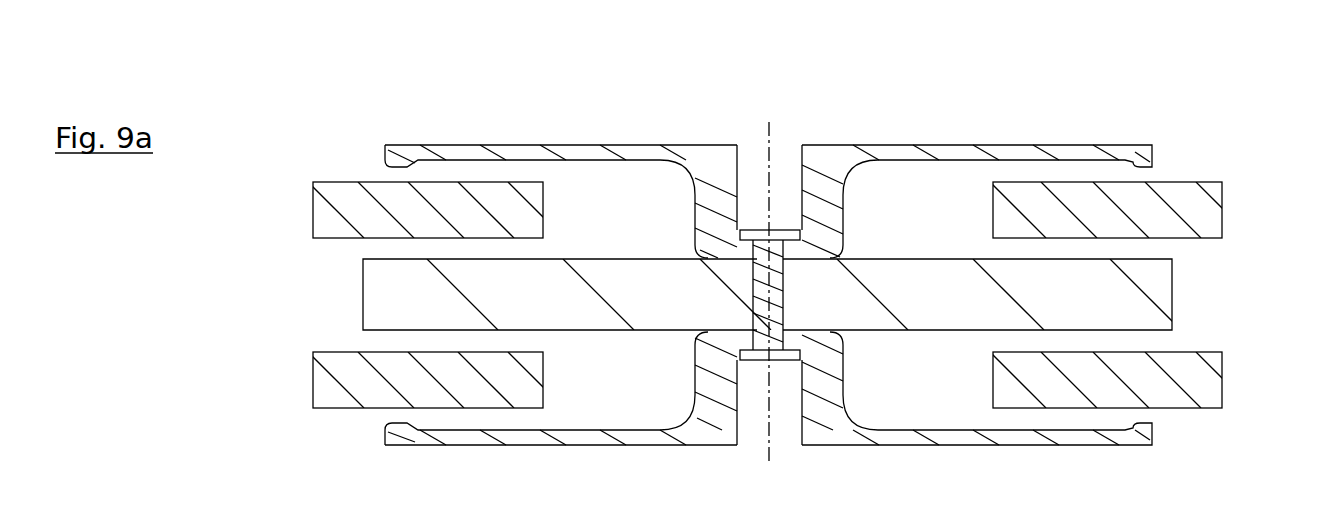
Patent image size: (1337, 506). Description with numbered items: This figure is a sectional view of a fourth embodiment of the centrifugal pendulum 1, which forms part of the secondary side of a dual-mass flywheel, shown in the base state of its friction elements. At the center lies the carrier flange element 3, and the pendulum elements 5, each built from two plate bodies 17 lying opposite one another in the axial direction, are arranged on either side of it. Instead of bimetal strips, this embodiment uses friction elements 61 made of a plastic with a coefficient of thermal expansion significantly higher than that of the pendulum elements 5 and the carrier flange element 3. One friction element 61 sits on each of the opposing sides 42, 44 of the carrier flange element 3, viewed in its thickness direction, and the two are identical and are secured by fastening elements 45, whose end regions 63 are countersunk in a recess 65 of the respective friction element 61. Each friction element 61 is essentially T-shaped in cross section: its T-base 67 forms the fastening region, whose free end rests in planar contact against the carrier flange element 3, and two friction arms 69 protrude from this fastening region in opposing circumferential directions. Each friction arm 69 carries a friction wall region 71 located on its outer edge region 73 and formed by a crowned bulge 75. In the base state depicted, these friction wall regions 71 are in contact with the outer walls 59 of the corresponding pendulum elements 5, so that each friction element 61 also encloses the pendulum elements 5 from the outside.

The centrifugal pendulum 1 is at (1258, 68).
The carrier flange element 3 is at (1160, 283).
The pendulum element 5 is at (337, 199).
The plate body 17 is at (332, 223).
The side of the carrier flange element 42 is at (645, 221).
The side of the carrier flange element 44 is at (662, 350).
The fastening element 45 is at (764, 250).
The outer wall 59 is at (330, 183).
The friction element 61 is at (932, 148).
The end region 63 is at (788, 220).
The recess 65 is at (788, 125).
The T-base 67 is at (825, 355).
The friction arm 69 is at (463, 148).
The friction wall region 71 is at (396, 162).
The outer edge region 73 is at (527, 114).
The crowned bulge 75 is at (1150, 160).